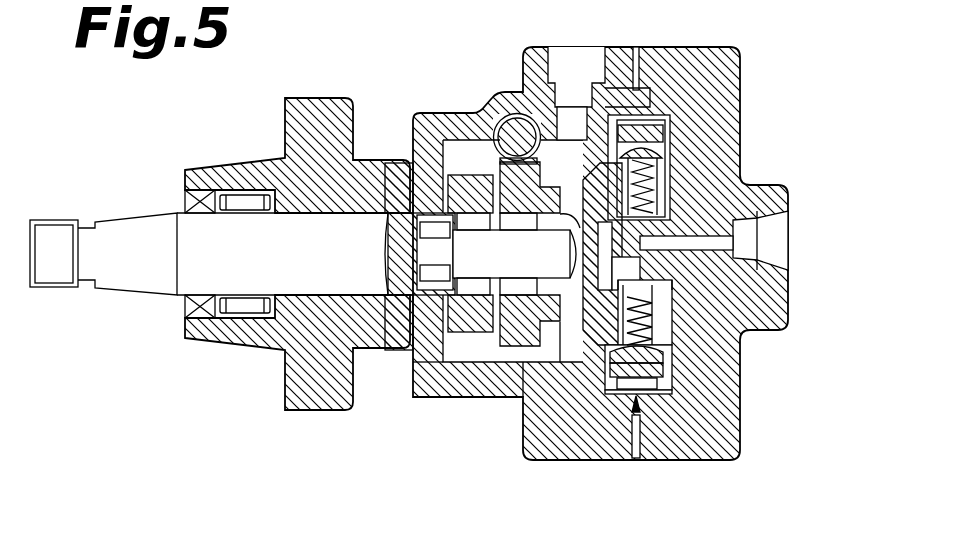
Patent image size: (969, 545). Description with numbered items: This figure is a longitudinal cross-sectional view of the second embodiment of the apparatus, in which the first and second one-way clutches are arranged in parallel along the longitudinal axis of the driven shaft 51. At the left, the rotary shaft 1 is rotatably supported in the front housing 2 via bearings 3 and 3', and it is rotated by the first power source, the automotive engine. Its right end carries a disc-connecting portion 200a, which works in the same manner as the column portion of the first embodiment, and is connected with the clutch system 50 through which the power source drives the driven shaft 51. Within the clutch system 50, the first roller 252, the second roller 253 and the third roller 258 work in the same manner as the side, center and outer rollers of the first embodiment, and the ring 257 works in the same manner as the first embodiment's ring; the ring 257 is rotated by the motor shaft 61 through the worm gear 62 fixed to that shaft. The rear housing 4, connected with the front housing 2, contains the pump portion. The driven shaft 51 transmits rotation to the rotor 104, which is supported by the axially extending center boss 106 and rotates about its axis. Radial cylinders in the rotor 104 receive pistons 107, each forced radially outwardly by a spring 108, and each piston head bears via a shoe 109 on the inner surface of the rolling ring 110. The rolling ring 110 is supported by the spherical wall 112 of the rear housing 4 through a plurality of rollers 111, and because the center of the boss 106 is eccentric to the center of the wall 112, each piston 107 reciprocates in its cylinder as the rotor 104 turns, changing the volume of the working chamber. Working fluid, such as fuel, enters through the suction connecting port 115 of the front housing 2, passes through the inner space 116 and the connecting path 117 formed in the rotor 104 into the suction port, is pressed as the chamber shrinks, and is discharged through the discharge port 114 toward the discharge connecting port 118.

The rotary shaft 1 is at (200, 270).
The front housing 2 is at (300, 158).
The bearing 3 is at (227, 280).
The bearing 3' is at (388, 226).
The rear housing 4 is at (715, 60).
The clutch system 50 is at (458, 148).
The driven shaft 51 is at (575, 350).
The motor shaft 61 is at (519, 130).
The worm gear 62 is at (505, 120).
The rotor 104 is at (655, 255).
The center boss 106 is at (718, 242).
The piston 107 is at (620, 270).
The spring 108 is at (660, 330).
The shoe 109 is at (660, 365).
The rolling ring 110 is at (690, 448).
The roller 111 is at (650, 400).
The spherical wall 112 is at (636, 412).
The discharge port 114 is at (738, 192).
The suction connecting port 115 is at (565, 75).
The inner space 116 is at (600, 125).
The connecting path 117 is at (560, 215).
The discharge connecting port 118 is at (780, 236).
The disc-connecting portion 200a is at (447, 360).
The first roller 252 is at (440, 290).
The second roller 253 is at (470, 300).
The ring 257 is at (520, 320).
The third roller 258 is at (522, 395).